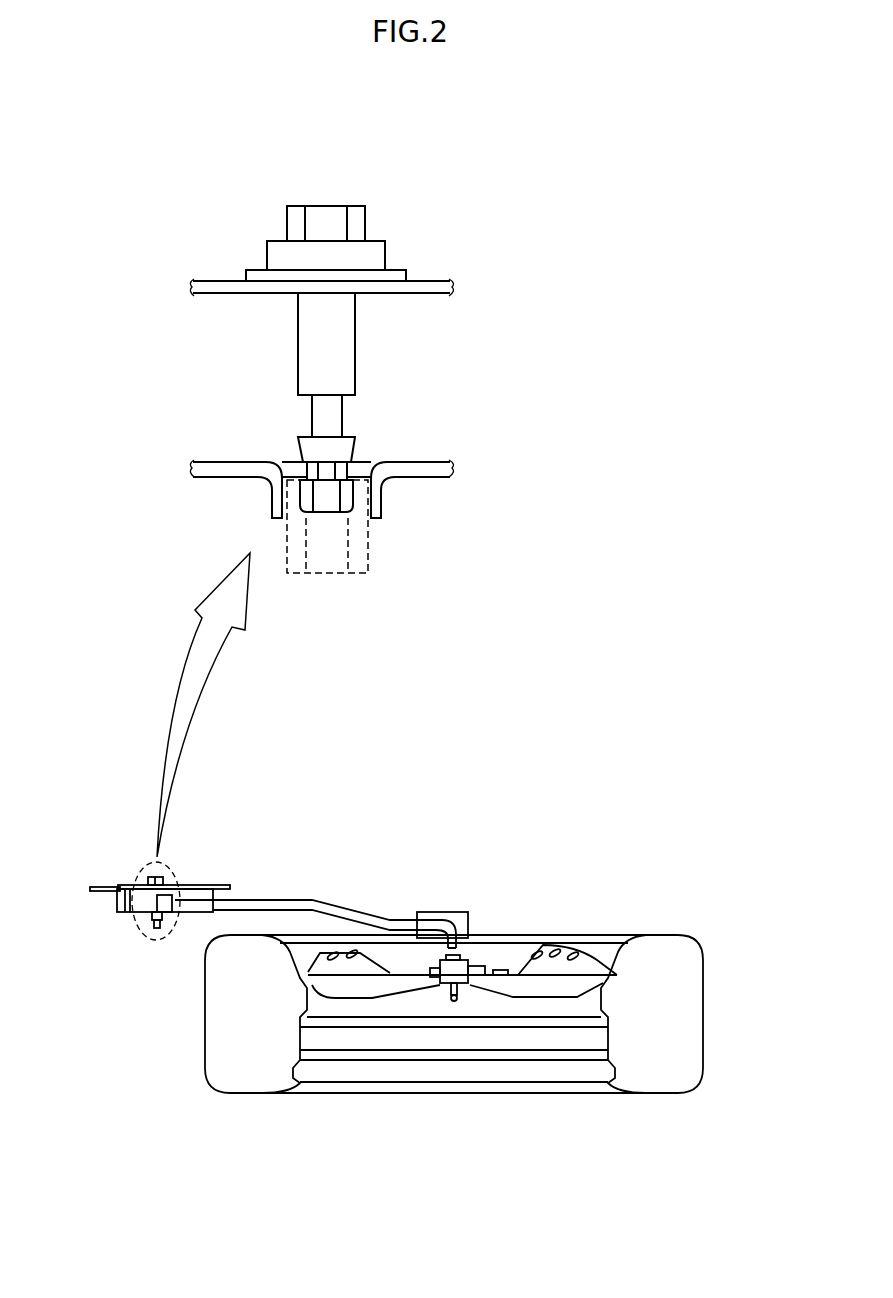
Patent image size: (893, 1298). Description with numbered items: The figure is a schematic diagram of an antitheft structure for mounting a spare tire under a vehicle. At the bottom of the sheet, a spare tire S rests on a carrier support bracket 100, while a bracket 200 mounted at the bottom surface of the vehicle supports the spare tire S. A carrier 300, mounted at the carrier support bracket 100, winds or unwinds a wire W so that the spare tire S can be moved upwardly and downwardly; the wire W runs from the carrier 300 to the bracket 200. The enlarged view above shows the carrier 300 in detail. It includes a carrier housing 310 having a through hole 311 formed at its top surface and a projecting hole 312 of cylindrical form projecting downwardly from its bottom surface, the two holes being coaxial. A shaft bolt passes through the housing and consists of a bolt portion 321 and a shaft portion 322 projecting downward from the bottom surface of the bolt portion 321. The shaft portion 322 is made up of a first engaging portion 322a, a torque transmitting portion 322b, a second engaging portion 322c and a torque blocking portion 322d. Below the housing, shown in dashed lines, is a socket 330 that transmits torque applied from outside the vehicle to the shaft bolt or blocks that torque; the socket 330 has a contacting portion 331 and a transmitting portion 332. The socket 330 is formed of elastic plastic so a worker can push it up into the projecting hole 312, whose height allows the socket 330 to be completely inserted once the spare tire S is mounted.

The carrier support bracket 100 is at (463, 975).
The bracket 200 is at (458, 917).
The carrier 300 is at (188, 887).
The carrier housing 310 is at (242, 470).
The through hole 311 is at (323, 292).
The projecting hole 312 is at (277, 495).
The bolt portion 321 is at (423, 200).
The shaft portion 322 is at (433, 442).
The first engaging portion 322a is at (383, 522).
The torque transmitting portion 322b is at (340, 470).
The second engaging portion 322c is at (337, 447).
The torque blocking portion 322d is at (329, 415).
The socket 330 is at (342, 600).
The contacting portion 331 is at (358, 555).
The transmitting portion 332 is at (318, 518).
The wire W is at (313, 905).
The spare tire S is at (675, 1015).